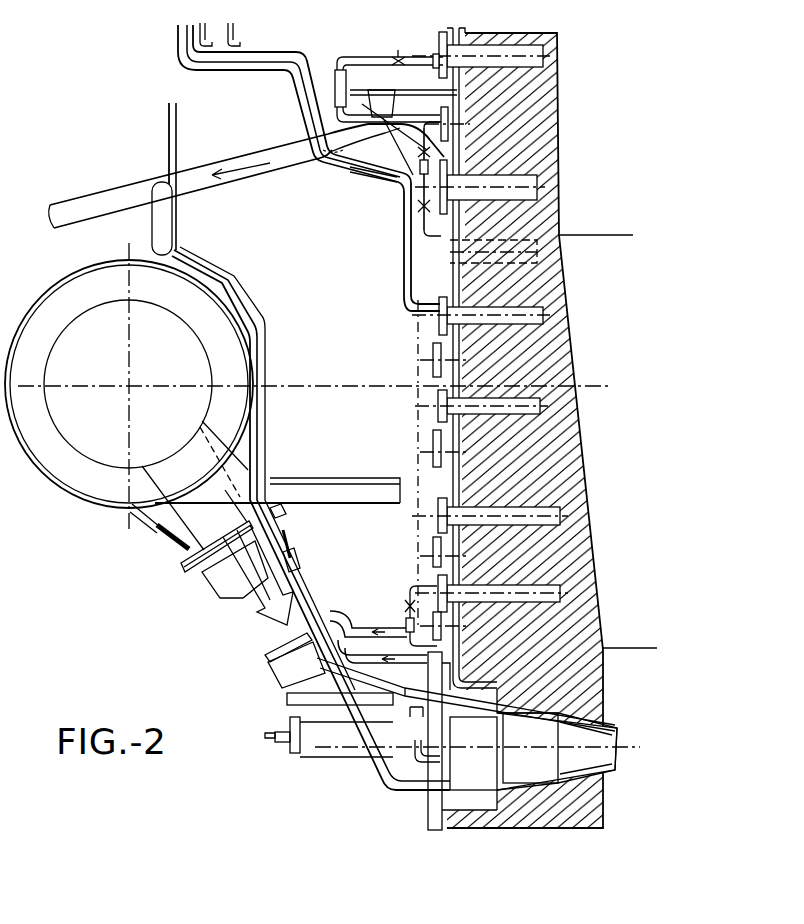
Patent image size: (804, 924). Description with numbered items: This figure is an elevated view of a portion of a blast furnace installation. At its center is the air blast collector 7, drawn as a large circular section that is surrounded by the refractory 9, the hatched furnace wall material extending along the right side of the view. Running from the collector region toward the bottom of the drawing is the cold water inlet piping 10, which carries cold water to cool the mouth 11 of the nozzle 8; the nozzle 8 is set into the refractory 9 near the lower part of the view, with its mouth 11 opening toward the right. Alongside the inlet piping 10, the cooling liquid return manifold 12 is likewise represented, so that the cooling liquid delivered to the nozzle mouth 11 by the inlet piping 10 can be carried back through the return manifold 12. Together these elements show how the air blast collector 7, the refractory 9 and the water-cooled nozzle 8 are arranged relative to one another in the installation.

The air blast collector 7 is at (105, 452).
The nozzle 8 is at (460, 775).
The refractory 9 is at (43, 457).
The cold water inlet piping 10 is at (285, 580).
The mouth of the nozzle 11 is at (613, 723).
The cooling liquid return manifold 12 is at (388, 750).